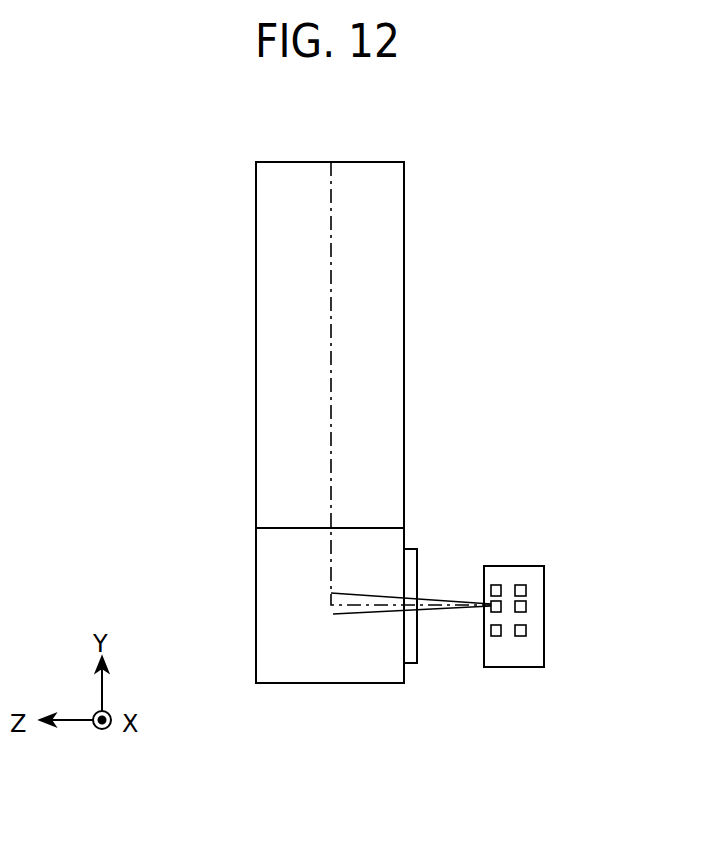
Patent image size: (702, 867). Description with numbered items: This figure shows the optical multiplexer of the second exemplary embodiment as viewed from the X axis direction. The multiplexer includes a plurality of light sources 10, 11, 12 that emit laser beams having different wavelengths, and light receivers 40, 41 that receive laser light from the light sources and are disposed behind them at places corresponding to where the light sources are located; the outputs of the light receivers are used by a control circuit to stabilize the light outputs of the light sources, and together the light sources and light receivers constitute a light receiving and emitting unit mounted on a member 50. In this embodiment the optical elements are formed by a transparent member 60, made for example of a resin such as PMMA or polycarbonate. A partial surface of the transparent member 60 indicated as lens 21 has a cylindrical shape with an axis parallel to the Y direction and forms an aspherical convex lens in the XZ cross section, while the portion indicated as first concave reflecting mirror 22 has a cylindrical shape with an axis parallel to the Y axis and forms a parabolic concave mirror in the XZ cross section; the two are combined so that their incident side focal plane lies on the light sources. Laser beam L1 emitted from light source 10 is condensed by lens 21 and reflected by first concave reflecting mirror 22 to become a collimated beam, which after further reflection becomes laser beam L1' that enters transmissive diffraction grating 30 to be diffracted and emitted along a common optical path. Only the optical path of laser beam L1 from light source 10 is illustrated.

The transmissive diffraction grating 30 is at (368, 162).
The transparent member 60 is at (256, 414).
The first concave reflecting mirror 22 is at (277, 662).
The lens 21 is at (417, 560).
The substrate 50 is at (513, 565).
The light source 12 is at (497, 585).
The light source 10 is at (497, 612).
The light source 11 is at (497, 637).
The light receiver 40 is at (526, 607).
The light receiver 41 is at (526, 592).
The laser beam L1 is at (411, 672).
The collimated laser beam L1' is at (330, 383).